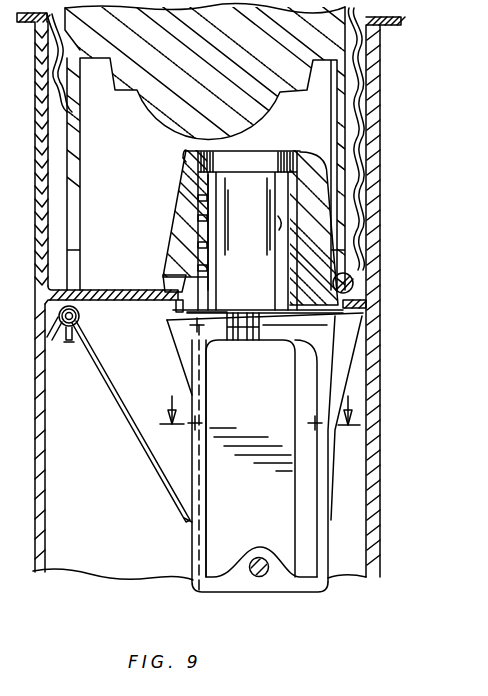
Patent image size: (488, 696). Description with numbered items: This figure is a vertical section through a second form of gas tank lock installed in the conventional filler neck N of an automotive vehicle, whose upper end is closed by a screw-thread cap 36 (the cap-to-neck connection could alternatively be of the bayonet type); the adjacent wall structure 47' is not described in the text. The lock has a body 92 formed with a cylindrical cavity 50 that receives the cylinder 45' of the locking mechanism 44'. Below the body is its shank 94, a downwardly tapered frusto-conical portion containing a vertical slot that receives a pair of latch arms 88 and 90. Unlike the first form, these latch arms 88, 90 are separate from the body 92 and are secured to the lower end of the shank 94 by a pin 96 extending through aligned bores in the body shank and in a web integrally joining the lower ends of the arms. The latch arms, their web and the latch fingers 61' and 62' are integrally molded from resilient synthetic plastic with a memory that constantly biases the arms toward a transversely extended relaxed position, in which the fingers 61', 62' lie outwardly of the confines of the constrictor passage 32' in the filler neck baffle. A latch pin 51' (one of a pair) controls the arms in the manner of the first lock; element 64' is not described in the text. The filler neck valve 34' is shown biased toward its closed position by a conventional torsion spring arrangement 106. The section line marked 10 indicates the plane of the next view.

The filler neck N is at (378, 163).
The screw-thread cap 36 is at (337, 32).
The bellows 47' is at (238, 139).
The constrictor passage 32' is at (232, 285).
The lock body 92 is at (178, 200).
The locking mechanism 44' is at (258, 211).
The cylinder 45' is at (189, 213).
The cylindrical cavity 50 is at (281, 220).
The latch pin 51' is at (247, 344).
The latch finger 61' is at (165, 356).
The latch finger 62' is at (292, 325).
The bar 64' is at (373, 449).
The latch arm 90 is at (322, 541).
The shank 94 is at (282, 505).
The pin 96 is at (258, 579).
The filler neck valve 34' is at (131, 421).
The latch arm 88 is at (193, 540).
The torsion spring arrangement 106 is at (69, 343).
The section line 10 is at (256, 401).